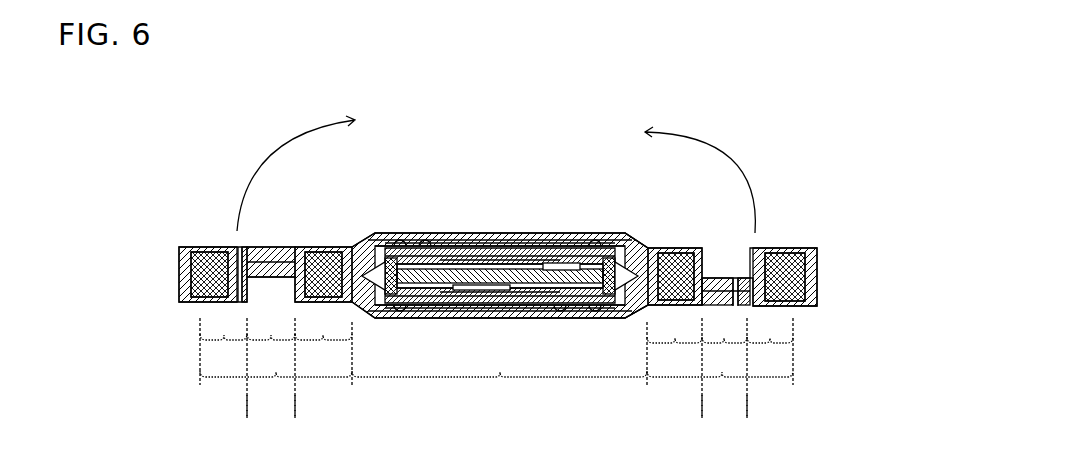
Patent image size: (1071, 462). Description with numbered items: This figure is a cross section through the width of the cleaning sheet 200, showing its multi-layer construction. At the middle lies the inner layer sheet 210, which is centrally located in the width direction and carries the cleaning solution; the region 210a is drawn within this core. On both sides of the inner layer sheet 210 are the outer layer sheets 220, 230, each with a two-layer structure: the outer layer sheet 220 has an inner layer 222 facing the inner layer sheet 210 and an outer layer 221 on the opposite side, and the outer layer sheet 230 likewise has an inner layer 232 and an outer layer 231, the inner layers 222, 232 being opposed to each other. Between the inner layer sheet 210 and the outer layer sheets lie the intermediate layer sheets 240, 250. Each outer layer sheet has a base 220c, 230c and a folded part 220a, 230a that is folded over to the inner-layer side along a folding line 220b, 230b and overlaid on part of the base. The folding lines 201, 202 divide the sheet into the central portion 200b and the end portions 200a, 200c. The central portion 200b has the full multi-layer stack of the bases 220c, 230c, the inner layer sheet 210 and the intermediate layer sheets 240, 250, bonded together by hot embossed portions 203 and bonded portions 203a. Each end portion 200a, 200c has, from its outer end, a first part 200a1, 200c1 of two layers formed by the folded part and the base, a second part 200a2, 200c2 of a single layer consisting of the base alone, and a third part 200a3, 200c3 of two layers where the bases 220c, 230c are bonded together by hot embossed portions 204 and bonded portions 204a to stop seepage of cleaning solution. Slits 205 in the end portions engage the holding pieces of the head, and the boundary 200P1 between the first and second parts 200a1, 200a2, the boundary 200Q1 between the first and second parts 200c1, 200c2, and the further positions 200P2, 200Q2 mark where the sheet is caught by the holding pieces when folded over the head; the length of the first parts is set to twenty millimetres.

The cleaning sheet 200 is at (410, 125).
The folding line 201 is at (616, 318).
The folding line 202 is at (381, 232).
The hot embossed portion 203 is at (400, 240).
The bonded portion 203a is at (426, 240).
The hot embossed portion 204 is at (312, 247).
The bonded portion 204a is at (291, 247).
The slit 205 is at (256, 247).
The inner layer sheet 210 is at (492, 236).
The core wire gap 210a is at (514, 312).
The outer layer sheet 220 is at (531, 326).
The folded part 220a is at (805, 248).
The folding line 220b is at (814, 284).
The base 220c is at (470, 318).
The outer layer 221 is at (449, 313).
The inner layer 222 is at (432, 313).
The outer layer sheet 230 is at (469, 225).
The folded part 230a is at (181, 301).
The folding line 230b is at (180, 250).
The base 230c is at (526, 236).
The outer layer 231 is at (544, 238).
The inner layer 232 is at (566, 238).
The intermediate layer sheet 240 is at (616, 240).
The intermediate layer sheet 250 is at (388, 318).
The end portion 200a is at (708, 405).
The first part 200a1 is at (751, 362).
The second part 200a2 is at (706, 362).
The third part 200a3 is at (657, 362).
The central portion 200b is at (485, 406).
The end portion 200c is at (261, 403).
The first part 200c1 is at (204, 362).
The second part 200c2 is at (252, 362).
The third part 200c3 is at (304, 362).
The boundary 200P1 is at (751, 415).
The position P2 200P2 is at (697, 415).
The boundary 200Q1 is at (237, 415).
The position Q2 200Q2 is at (302, 415).